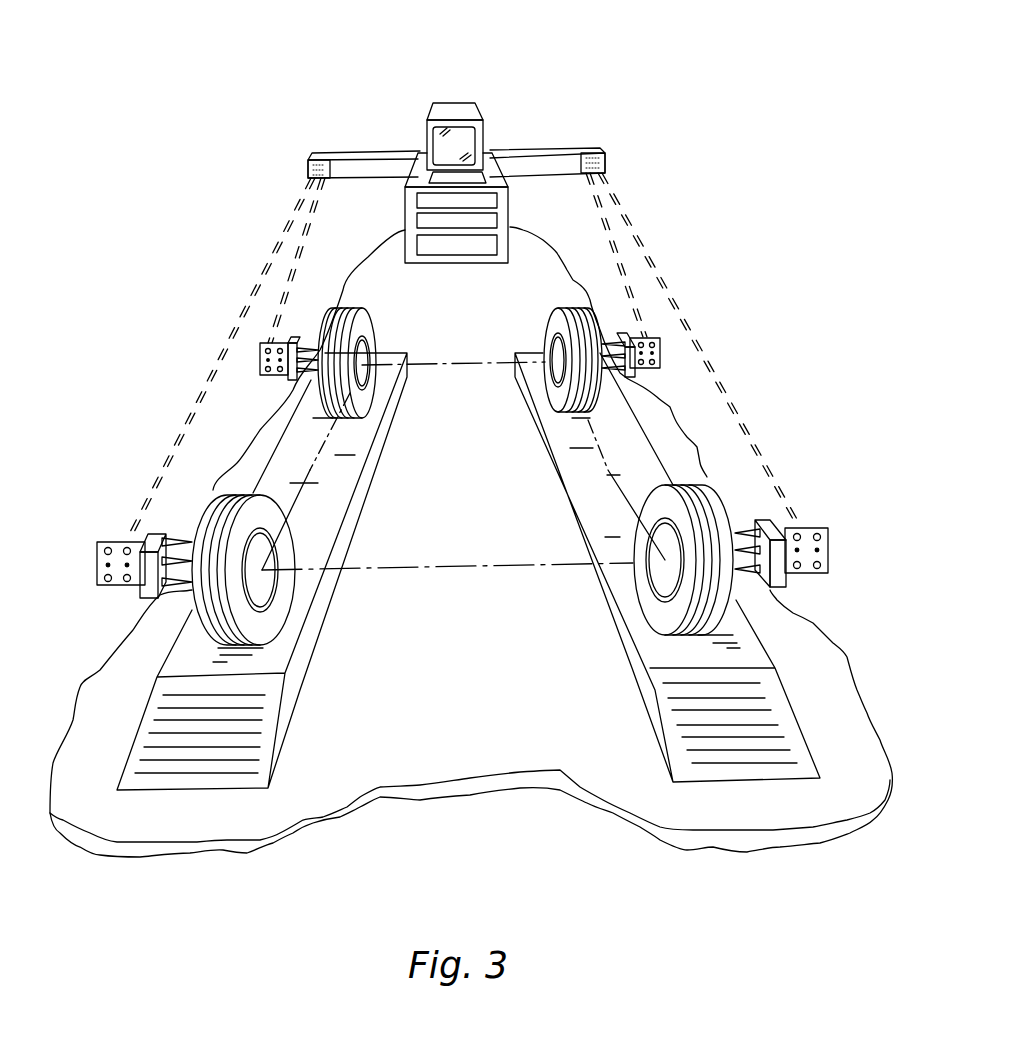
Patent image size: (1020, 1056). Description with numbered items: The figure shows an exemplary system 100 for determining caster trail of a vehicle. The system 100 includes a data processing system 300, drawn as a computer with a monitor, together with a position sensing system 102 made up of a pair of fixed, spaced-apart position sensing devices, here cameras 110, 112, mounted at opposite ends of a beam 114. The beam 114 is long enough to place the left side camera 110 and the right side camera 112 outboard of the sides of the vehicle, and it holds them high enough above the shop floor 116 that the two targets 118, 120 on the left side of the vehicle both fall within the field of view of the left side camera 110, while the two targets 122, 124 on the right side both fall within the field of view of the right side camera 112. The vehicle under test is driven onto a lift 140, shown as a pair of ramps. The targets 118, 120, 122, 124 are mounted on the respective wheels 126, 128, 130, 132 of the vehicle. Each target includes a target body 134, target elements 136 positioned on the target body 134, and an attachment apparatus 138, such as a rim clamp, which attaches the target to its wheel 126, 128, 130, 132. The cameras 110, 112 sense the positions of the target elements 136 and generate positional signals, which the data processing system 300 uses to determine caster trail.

The system for determining caster trail 100 is at (800, 302).
The position sensing system 102 is at (464, 289).
The left side camera 110 is at (308, 160).
The right side camera 112 is at (603, 153).
The beam 114 is at (398, 152).
The shop floor 116 is at (385, 283).
The target 118 is at (258, 360).
The target 120 is at (113, 538).
The target 122 is at (661, 340).
The target 124 is at (805, 536).
The wheel 126 is at (370, 400).
The wheel 128 is at (280, 615).
The wheel 130 is at (553, 402).
The wheel 132 is at (647, 603).
The target body 134 is at (812, 528).
The target elements 136 is at (828, 563).
The attachment apparatus 138 is at (762, 519).
The lift 140 is at (560, 483).
The data processing system 300 is at (460, 112).